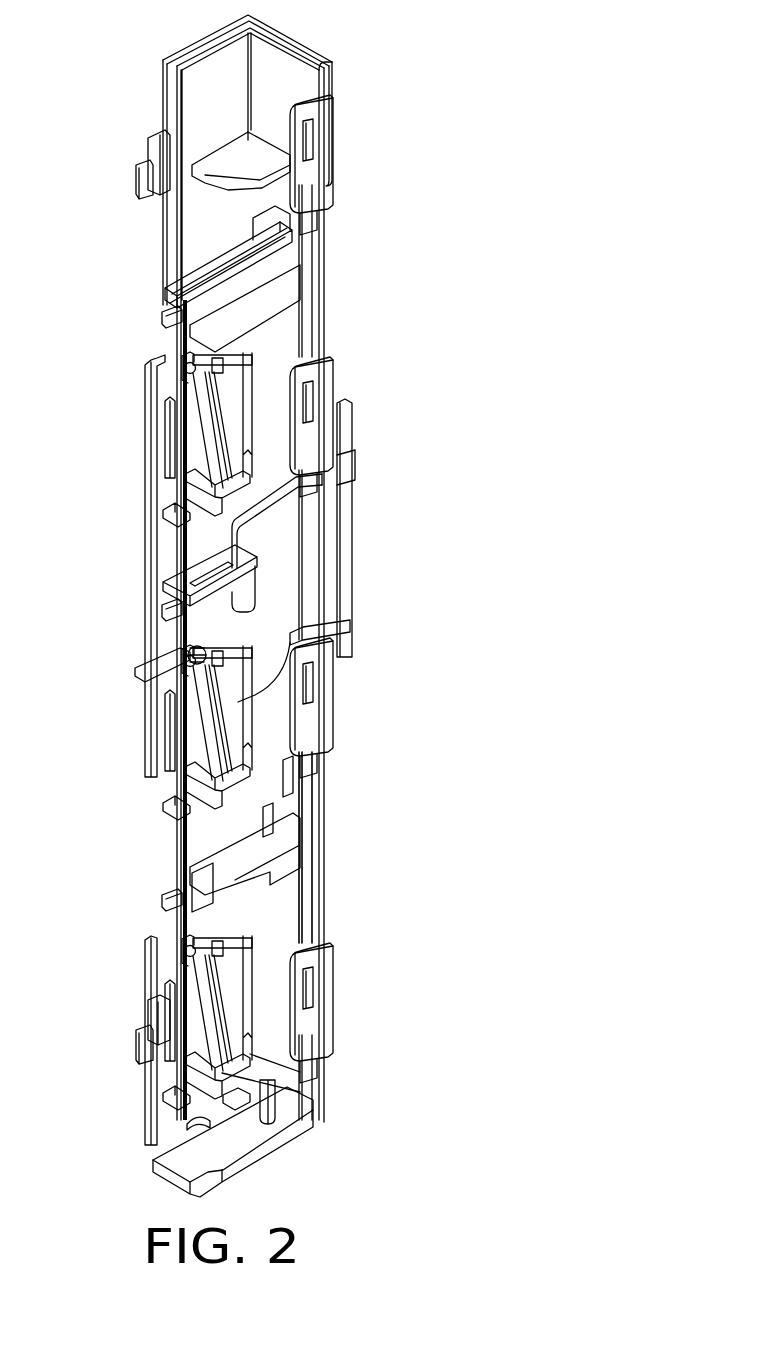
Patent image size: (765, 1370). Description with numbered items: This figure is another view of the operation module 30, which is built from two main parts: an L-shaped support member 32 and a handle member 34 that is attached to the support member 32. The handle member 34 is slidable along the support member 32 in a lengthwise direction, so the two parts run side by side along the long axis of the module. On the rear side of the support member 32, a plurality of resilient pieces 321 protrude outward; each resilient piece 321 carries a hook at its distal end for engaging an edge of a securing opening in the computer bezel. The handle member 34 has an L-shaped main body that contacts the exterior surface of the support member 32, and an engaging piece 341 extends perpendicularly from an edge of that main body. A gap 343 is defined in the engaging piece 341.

The operation module 30 is at (450, 76).
The support member 32 is at (262, 52).
The resilient pieces 321 is at (190, 283).
The handle member 34 is at (345, 483).
The engaging piece 341 is at (300, 550).
The gap 343 is at (285, 592).